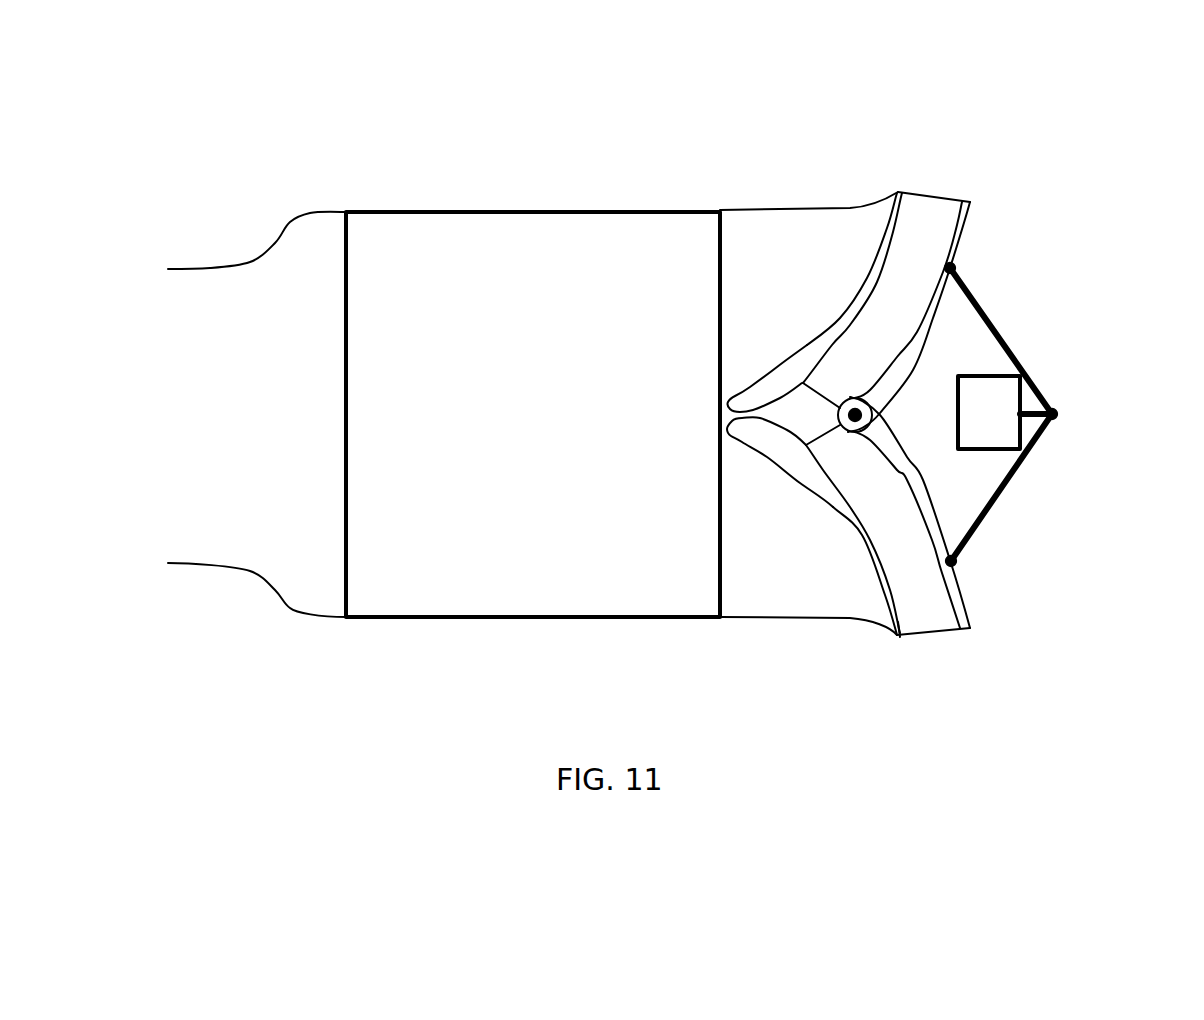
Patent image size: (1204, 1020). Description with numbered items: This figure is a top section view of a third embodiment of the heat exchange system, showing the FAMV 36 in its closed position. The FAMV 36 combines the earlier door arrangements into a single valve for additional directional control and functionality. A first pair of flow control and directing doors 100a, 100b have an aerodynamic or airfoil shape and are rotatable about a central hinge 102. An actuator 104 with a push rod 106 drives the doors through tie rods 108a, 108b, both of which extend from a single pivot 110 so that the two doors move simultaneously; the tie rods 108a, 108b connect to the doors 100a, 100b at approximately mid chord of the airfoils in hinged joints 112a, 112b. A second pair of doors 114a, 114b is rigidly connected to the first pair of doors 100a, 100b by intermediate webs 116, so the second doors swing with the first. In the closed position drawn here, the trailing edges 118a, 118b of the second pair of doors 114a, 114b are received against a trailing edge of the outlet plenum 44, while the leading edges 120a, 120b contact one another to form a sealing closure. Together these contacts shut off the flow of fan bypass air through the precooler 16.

The FAMV 36 is at (963, 83).
The precooler 16 is at (532, 620).
The outlet plenum 44 is at (800, 217).
The flow control and directing door 100a is at (824, 283).
The flow control and directing door 100b is at (820, 587).
The central hinge 102 is at (853, 422).
The actuator 104 is at (995, 417).
The push rod 106 is at (1053, 415).
The tie rod 108a is at (990, 318).
The tie rod 108b is at (1003, 490).
The single pivot 110 is at (1056, 414).
The hinged joint 112a is at (953, 267).
The hinged joint 112b is at (955, 562).
The door 114a is at (893, 240).
The door 114b is at (903, 547).
The intermediate web 116 is at (893, 590).
The trailing edge 118a is at (898, 193).
The trailing edge 118b is at (898, 622).
The leading edge 120a is at (735, 402).
The leading edge 120b is at (738, 430).